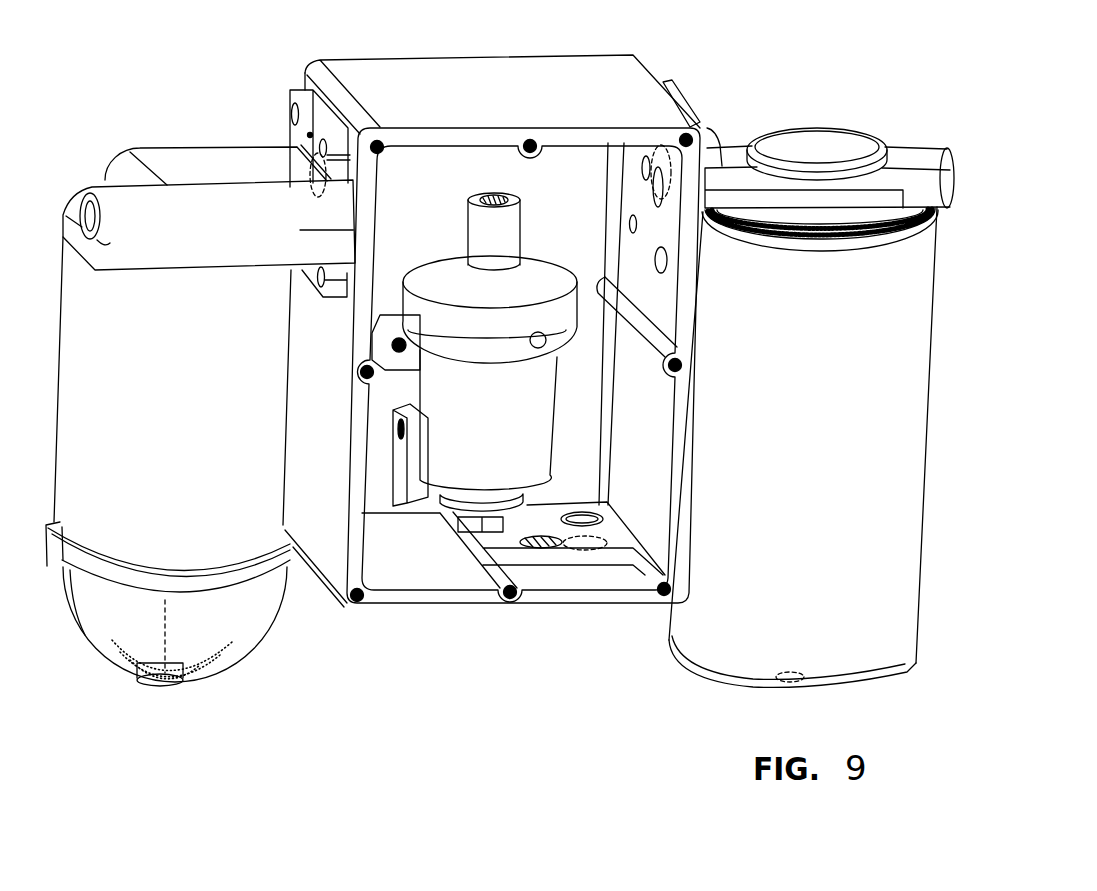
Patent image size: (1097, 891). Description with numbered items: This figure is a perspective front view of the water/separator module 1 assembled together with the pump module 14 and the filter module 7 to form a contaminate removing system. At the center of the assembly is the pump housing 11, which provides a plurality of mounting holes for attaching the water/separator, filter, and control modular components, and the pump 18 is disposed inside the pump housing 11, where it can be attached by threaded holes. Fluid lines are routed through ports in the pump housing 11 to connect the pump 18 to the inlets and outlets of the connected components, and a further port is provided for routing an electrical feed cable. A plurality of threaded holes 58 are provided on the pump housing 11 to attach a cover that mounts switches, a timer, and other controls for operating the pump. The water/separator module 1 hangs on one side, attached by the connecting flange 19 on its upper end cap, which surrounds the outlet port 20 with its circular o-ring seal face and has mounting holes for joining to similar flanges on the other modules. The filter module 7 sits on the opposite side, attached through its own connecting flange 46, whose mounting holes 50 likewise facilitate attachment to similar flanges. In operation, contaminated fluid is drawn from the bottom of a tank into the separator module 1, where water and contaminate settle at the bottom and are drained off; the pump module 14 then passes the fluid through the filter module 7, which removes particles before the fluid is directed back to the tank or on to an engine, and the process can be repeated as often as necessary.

The water/separator module 1 is at (137, 152).
The filter module 7 is at (858, 136).
The pump housing 11 is at (438, 607).
The pump module 14 is at (388, 82).
The pump 18 is at (484, 436).
The connecting flange 19 is at (310, 135).
The outlet port 20 is at (292, 114).
The connecting flange 46 is at (680, 92).
The mounting holes 50 is at (660, 261).
The threaded holes 58 is at (359, 604).